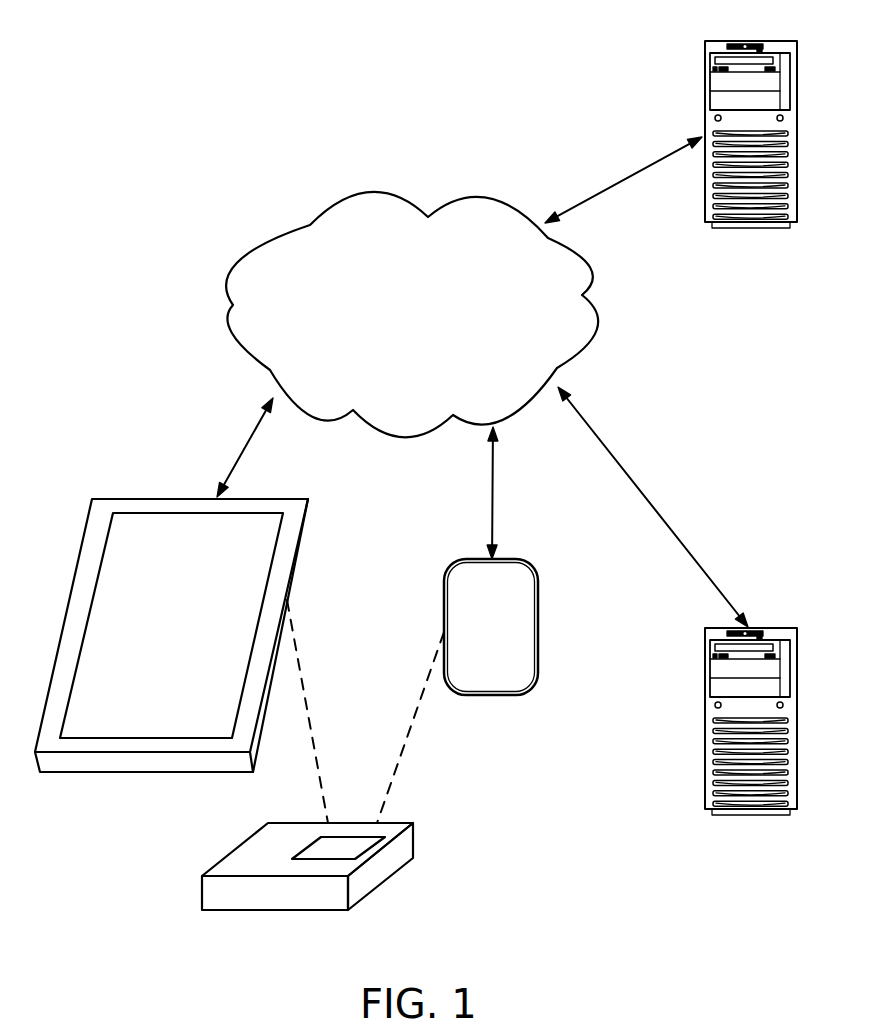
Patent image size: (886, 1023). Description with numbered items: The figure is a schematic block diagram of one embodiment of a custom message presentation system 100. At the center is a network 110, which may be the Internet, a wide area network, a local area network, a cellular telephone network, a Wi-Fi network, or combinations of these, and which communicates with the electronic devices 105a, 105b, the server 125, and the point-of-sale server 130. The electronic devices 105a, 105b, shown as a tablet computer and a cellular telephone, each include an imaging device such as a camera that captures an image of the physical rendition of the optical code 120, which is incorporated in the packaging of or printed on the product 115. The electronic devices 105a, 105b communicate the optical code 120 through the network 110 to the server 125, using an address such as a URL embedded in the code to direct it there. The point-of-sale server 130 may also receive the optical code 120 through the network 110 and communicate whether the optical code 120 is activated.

The custom message presentation system 100 is at (106, 121).
The electronic device 105a is at (127, 498).
The electronic device 105b is at (460, 558).
The network 110 is at (396, 336).
The product 115 is at (232, 850).
The optical code 120 is at (338, 848).
The server 125 is at (702, 83).
The point-of-sale server 130 is at (702, 643).